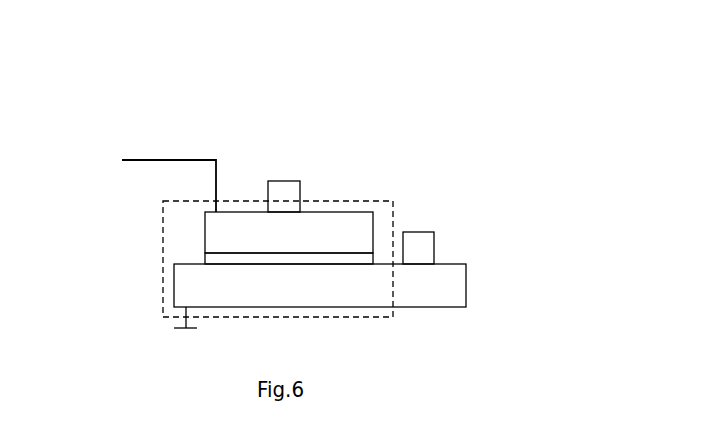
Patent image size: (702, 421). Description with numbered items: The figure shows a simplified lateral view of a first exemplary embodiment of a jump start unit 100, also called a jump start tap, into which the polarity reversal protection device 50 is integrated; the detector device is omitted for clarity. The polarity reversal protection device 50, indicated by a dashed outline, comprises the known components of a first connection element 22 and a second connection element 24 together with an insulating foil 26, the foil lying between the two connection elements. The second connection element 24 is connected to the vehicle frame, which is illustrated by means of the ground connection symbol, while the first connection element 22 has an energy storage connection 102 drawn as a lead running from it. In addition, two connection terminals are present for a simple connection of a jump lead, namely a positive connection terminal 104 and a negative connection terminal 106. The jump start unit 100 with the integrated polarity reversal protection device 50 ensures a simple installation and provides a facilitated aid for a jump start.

The jump start unit 100 is at (143, 71).
The energy storage connection 102 is at (151, 158).
The positive connection terminal 104 is at (288, 191).
The negative connection terminal 106 is at (424, 242).
The polarity reversal protection device 50 is at (163, 224).
The second connection element 24 is at (333, 222).
The insulating foil 26 is at (216, 258).
The first connection element 22 is at (190, 290).